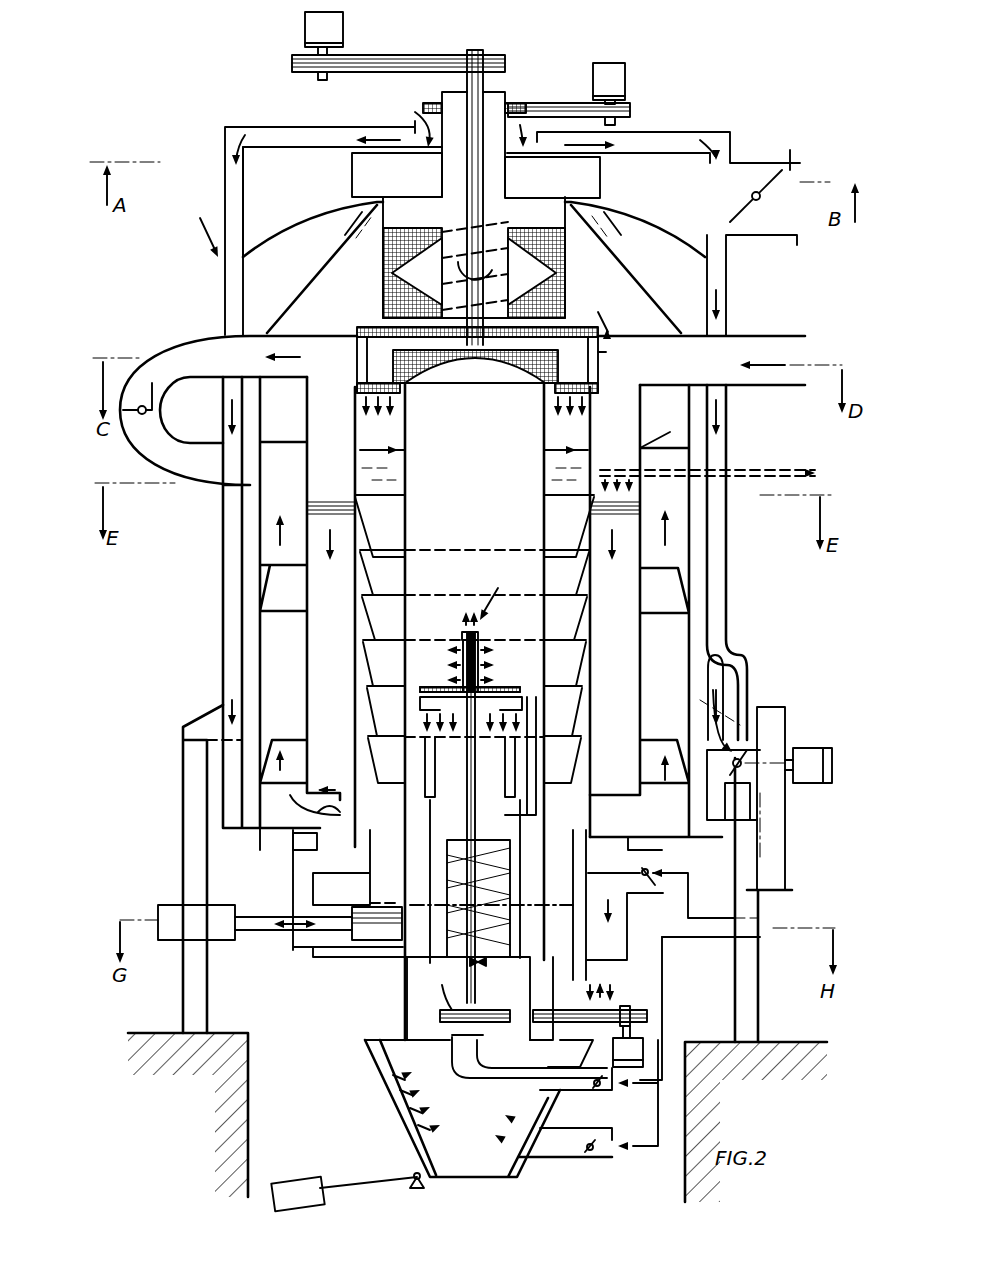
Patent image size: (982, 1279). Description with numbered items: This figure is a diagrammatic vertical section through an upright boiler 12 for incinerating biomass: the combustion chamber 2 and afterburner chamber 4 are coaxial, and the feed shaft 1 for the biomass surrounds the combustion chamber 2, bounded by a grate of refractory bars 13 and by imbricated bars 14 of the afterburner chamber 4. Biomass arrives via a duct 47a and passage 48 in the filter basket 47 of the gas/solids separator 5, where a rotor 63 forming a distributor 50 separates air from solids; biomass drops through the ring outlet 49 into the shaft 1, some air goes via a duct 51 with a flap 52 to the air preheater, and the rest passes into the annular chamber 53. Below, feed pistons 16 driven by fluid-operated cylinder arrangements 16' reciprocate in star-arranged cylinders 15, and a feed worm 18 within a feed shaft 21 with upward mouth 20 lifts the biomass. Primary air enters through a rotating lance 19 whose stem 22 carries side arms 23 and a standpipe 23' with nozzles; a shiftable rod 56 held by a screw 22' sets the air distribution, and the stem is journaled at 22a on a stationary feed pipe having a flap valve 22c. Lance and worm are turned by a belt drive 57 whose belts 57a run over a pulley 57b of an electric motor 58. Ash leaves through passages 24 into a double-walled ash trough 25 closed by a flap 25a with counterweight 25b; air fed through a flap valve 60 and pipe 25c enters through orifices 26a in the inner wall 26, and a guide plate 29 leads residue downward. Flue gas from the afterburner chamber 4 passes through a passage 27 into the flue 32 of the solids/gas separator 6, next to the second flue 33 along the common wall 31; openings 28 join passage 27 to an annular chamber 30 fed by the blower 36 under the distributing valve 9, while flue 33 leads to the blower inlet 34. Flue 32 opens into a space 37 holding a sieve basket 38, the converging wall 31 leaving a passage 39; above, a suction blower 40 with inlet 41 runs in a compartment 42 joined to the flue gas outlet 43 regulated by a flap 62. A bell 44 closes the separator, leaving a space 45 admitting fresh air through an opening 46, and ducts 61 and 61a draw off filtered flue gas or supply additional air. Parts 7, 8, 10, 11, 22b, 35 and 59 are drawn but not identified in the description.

The feed shaft 1 is at (392, 535).
The combustion chamber 2 is at (504, 475).
The afterburner chamber 4 is at (332, 668).
The gas/solids separator 5 is at (606, 309).
The solid/gas separator 6 is at (242, 672).
The valve lever 7 is at (752, 755).
The nozzle 8 is at (405, 1102).
The distributing valve 9 is at (668, 862).
The water inlet chamber 10 is at (736, 452).
The air duct 11 is at (265, 128).
The boiler 12 is at (199, 225).
The grate bars 13 is at (408, 512).
The bars 14 is at (380, 452).
The cylinders 15 is at (335, 950).
The feed pistons 16 is at (376, 952).
The fluid operated cylinder arrangement 16' is at (192, 869).
The feed worm 18 is at (515, 870).
The lance 19 is at (498, 592).
The mouth 20 is at (522, 722).
The feed shaft 21 is at (533, 822).
The stem 22 is at (489, 850).
The screw 22' is at (490, 983).
The journal 22a is at (408, 1058).
The outlet pipe 22b is at (565, 1092).
The flap valve 22c is at (605, 1105).
The side arms 23 is at (474, 697).
The standpipe 23' is at (459, 647).
The passages 24 is at (405, 1012).
The ash trough 25 is at (492, 1128).
The flap 25a is at (485, 1179).
The counterweight 25b is at (298, 1178).
The pipe 25c is at (540, 1160).
The inner wall 26 is at (420, 1163).
The orifices 26a is at (395, 1093).
The passage 27 is at (315, 800).
The openings 28 is at (320, 852).
The guide plate 29 is at (275, 832).
The annular chamber 30 is at (628, 905).
The common wall 31 is at (258, 505).
The flue 32 is at (290, 643).
The second flue 33 is at (245, 545).
The inlet 34 is at (770, 775).
The wedge baffle 35 is at (270, 580).
The blower 36 is at (798, 735).
The space 37 is at (318, 290).
The sieve basket 38 is at (566, 278).
The passage 39 is at (368, 240).
The suction blower 40 is at (600, 177).
The inlet 41 is at (395, 202).
The compartment 42 is at (305, 188).
The flue gas outlet 43 is at (787, 146).
The bell 44 is at (226, 172).
The space 45 is at (728, 262).
The opening 46 is at (414, 114).
The filter basket 47 is at (588, 373).
The duct 47a is at (757, 340).
The passage 48 is at (615, 351).
The outlet ring 49 is at (392, 415).
The distributor 50 is at (376, 335).
The duct 51 is at (462, 410).
The flap 52 is at (152, 380).
The annular chamber 53 is at (340, 352).
The rod 56 is at (466, 755).
The belt drive 57 is at (598, 1005).
The belts 57a is at (626, 1006).
The pulley 57b is at (632, 1016).
The electric motor 58 is at (640, 1052).
The passage 59 is at (412, 792).
The flap valve 60 is at (588, 1152).
The duct 61 is at (580, 945).
The further duct 61a is at (362, 871).
The flap 62 is at (744, 205).
The rotor 63 is at (398, 50).